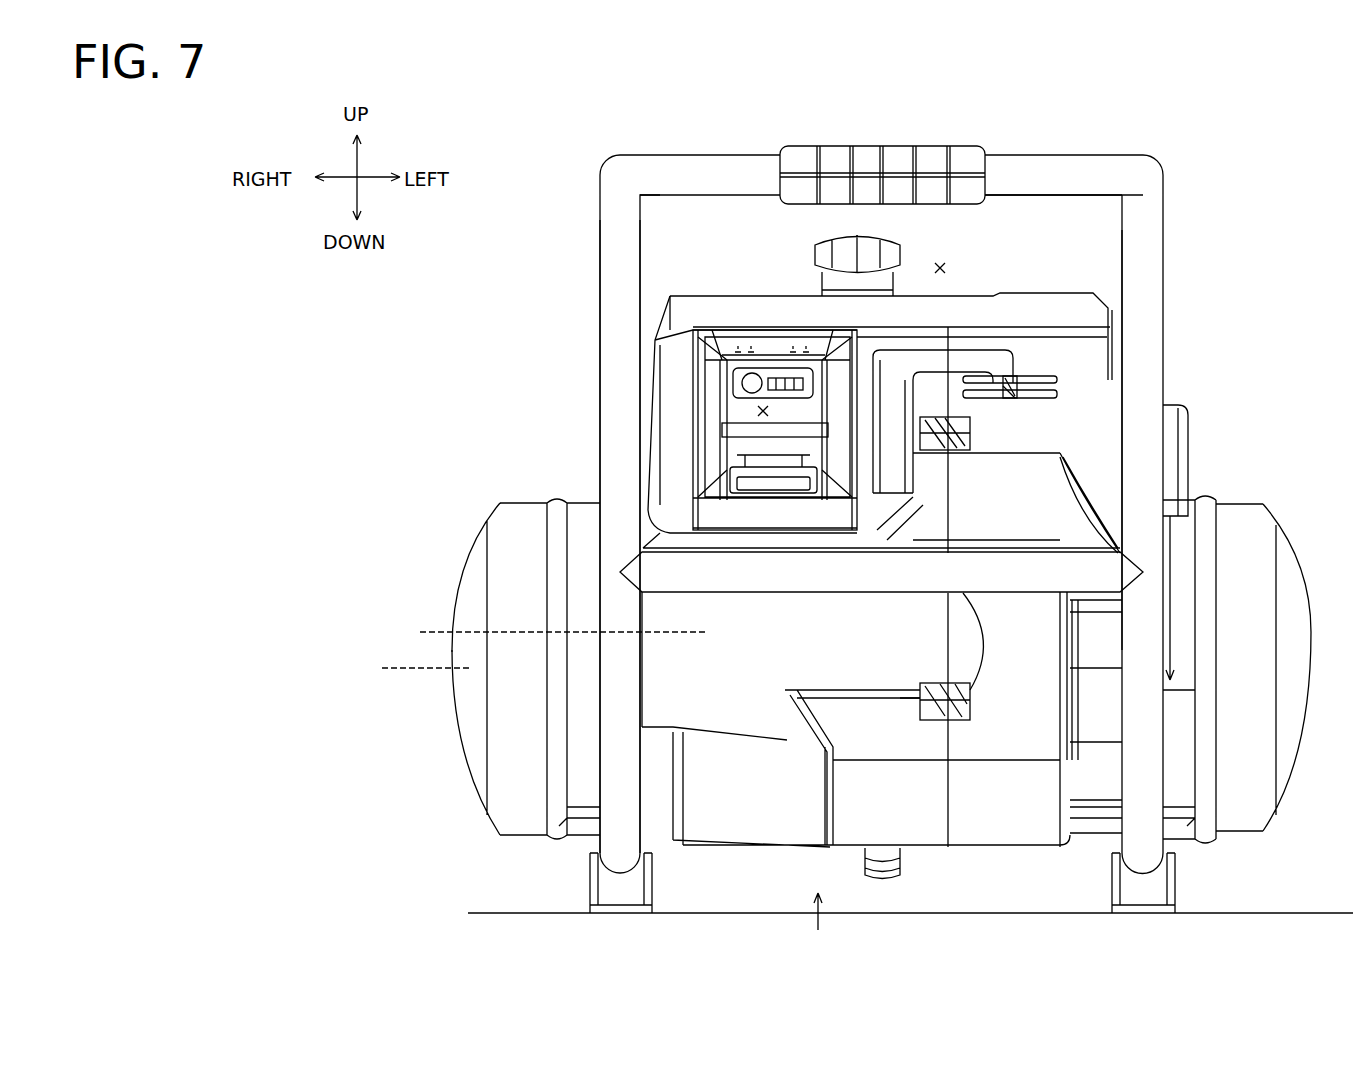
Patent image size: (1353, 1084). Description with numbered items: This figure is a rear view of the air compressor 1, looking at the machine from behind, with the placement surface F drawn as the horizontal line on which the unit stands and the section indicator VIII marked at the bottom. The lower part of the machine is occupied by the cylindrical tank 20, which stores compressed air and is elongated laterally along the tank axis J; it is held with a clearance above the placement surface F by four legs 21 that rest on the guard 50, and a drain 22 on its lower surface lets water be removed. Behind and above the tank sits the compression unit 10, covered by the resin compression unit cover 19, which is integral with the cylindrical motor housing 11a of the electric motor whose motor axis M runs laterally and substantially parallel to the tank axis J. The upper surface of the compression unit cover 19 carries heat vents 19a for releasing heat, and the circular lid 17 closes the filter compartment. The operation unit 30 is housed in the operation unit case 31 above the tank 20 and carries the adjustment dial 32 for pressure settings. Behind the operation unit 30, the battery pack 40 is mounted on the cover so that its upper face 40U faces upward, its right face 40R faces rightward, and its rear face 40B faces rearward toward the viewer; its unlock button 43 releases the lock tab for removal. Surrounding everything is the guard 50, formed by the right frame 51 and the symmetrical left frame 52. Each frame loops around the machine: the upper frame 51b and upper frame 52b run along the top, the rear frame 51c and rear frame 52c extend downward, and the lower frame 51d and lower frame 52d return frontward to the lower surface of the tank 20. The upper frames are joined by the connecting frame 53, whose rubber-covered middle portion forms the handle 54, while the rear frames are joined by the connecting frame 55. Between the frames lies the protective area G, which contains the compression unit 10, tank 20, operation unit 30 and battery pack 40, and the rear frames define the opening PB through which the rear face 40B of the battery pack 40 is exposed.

The air compressor 1 is at (1242, 149).
The compression unit 10 is at (1021, 475).
The motor housing 11a is at (705, 676).
The lid 17 is at (1185, 432).
The compression unit cover 19 is at (1000, 800).
The heat vents 19a is at (1030, 395).
The tank 20 is at (509, 525).
The legs 21 is at (592, 875).
The drain 22 is at (880, 862).
The operation unit 30 is at (987, 279).
The operation unit case 31 is at (700, 320).
The adjustment dial 32 is at (866, 248).
The battery pack 40 is at (729, 394).
The upper face 40U is at (755, 325).
The rear face 40B is at (785, 410).
The right face 40R is at (713, 427).
The unlock button 43 is at (760, 462).
The guard 50 is at (1190, 211).
The right frame 51 is at (607, 317).
The upper frame 51b is at (628, 154).
The rear frame 51c is at (620, 217).
The lower frame 51d is at (646, 866).
The left frame 52 is at (1161, 293).
The upper frame 52b is at (1141, 154).
The rear frame 52c is at (1143, 260).
The lower frame 52d is at (1120, 868).
The connecting frame 53 is at (1072, 170).
The handle 54 is at (958, 165).
The connecting frame 55 is at (1021, 558).
The placement surface F is at (1290, 913).
The protective area G is at (940, 268).
The motor axis M is at (551, 633).
The tank axis J is at (414, 669).
The opening PB is at (758, 411).
The section line VIII is at (819, 924).